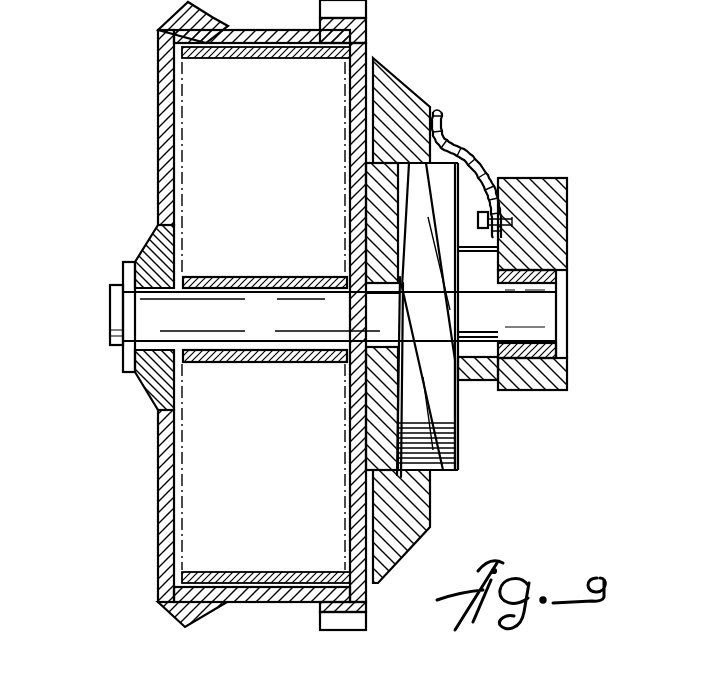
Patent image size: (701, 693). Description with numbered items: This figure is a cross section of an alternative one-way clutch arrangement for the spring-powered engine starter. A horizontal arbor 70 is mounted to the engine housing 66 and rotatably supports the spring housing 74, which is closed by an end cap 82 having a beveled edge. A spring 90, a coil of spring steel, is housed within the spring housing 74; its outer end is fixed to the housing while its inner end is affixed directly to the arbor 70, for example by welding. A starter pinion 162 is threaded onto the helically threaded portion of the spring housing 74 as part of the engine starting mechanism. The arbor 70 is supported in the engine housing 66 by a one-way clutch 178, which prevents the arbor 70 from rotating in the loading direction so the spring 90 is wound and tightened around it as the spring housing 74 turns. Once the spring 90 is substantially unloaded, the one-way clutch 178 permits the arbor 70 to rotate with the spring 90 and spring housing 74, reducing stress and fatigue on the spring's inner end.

The spring housing 74 is at (110, 405).
The end cap 82 is at (163, 143).
The spring 90 is at (243, 60).
The arbor 70 is at (273, 303).
The starter pinion 162 is at (403, 503).
The engine housing 66 is at (533, 380).
The one-way clutch 178 is at (538, 272).